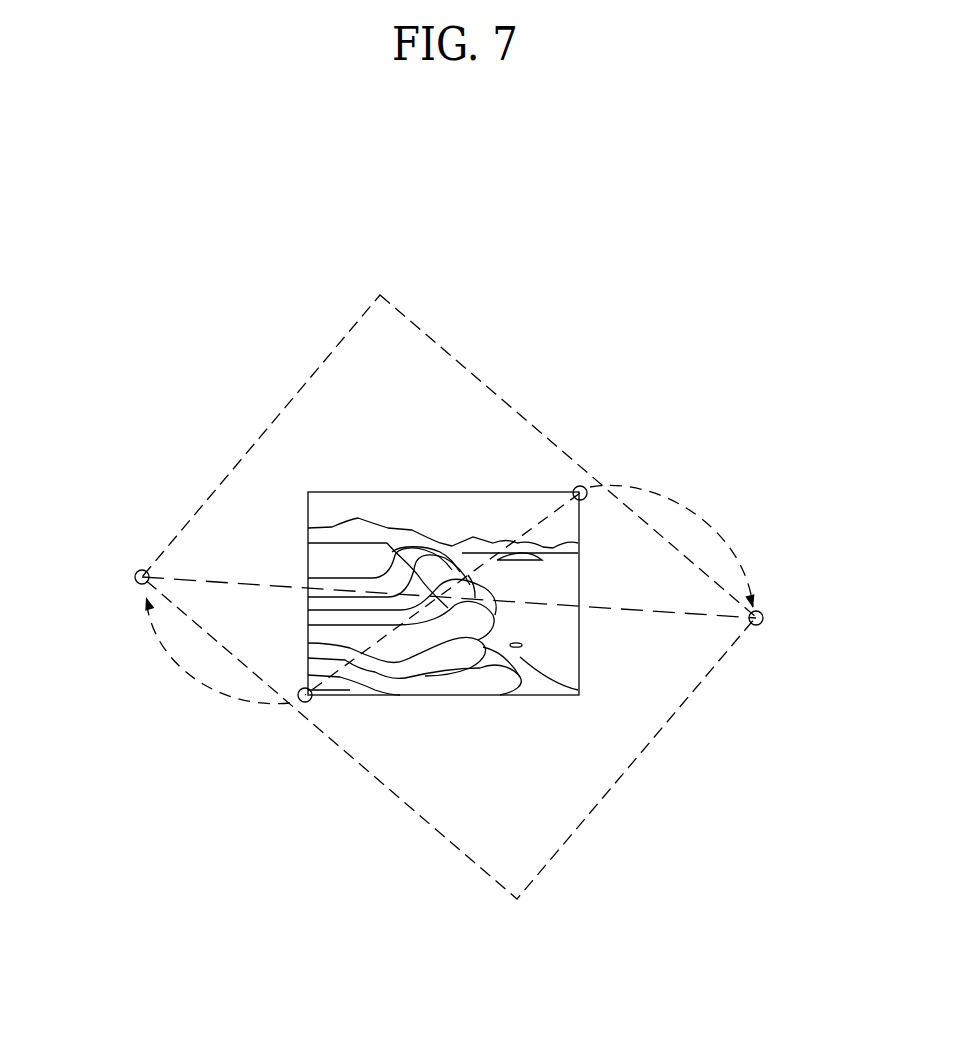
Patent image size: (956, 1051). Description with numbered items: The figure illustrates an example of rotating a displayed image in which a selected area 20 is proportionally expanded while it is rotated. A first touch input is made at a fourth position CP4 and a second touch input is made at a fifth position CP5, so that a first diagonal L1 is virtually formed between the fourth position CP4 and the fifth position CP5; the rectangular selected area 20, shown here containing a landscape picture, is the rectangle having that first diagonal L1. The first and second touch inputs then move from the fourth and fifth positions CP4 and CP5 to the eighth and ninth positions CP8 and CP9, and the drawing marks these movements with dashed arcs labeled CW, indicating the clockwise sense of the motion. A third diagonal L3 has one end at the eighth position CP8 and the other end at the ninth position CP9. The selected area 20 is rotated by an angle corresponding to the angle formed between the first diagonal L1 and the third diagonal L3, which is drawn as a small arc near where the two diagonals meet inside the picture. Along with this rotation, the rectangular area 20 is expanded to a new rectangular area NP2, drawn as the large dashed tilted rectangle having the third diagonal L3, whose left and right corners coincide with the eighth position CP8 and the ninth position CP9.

The selected area 20 is at (286, 533).
The new rectangular area NP2 is at (463, 349).
The first diagonal L1 is at (540, 522).
The third diagonal L3 is at (673, 615).
The fourth position CP4 is at (305, 712).
The fifth position CP5 is at (584, 479).
The eighth position CP8 is at (130, 593).
The ninth position CP9 is at (766, 607).
The clockwise rotation direction CW is at (449, 592).